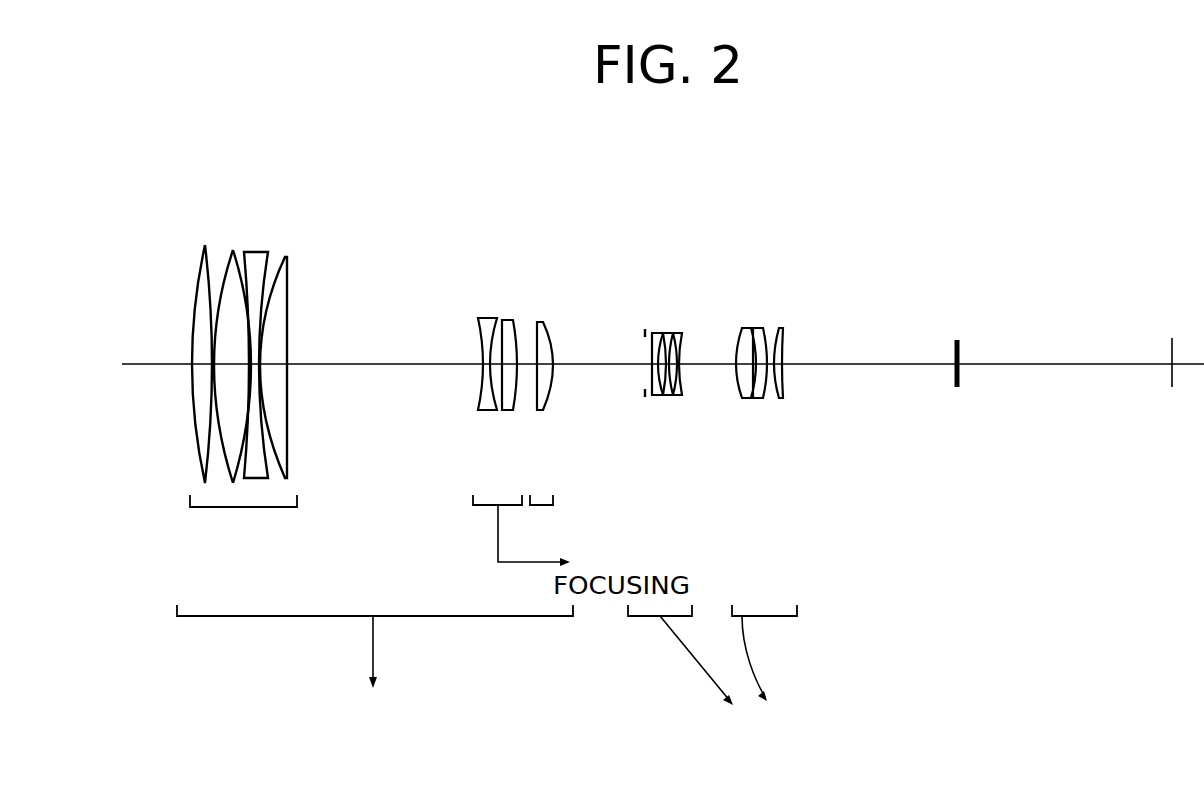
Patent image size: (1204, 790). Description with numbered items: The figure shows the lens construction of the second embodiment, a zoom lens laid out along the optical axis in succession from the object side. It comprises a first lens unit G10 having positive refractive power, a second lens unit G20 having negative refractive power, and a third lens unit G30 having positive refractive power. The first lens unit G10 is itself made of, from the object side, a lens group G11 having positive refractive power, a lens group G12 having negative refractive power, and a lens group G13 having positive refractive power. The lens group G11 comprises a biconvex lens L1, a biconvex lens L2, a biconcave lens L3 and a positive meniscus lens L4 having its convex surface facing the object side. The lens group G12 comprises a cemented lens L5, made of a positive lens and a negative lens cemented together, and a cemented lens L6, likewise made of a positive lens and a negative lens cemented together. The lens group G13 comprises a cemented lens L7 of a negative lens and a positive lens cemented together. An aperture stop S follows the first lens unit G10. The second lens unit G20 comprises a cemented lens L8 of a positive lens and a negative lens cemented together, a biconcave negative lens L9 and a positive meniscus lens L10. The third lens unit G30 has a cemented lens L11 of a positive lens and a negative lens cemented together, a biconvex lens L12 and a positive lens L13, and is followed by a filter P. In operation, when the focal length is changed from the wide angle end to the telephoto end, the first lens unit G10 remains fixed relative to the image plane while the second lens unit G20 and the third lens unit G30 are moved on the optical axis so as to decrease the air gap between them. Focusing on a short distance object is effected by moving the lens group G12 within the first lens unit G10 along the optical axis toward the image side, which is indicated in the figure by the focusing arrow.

The biconvex lens L1 is at (205, 245).
The biconvex lens L2 is at (233, 250).
The biconcave lens L3 is at (257, 252).
The positive meniscus lens L4 is at (285, 257).
The cemented lens L5 is at (497, 296).
The cemented lens L6 is at (528, 296).
The cemented lens L7 is at (533, 296).
The cemented lens L8 is at (668, 317).
The biconcave negative lens L9 is at (666, 333).
The positive meniscus lens L10 is at (678, 333).
The cemented lens L11 is at (763, 317).
The biconvex lens L12 is at (766, 333).
The positive lens L13 is at (783, 333).
The aperture stop S is at (644, 333).
The filter P is at (959, 340).
The first lens unit G10 is at (375, 646).
The lens group G11 is at (243, 519).
The lens group G12 is at (507, 530).
The lens group G13 is at (554, 520).
The second lens unit G20 is at (674, 655).
The third lens unit G30 is at (772, 653).